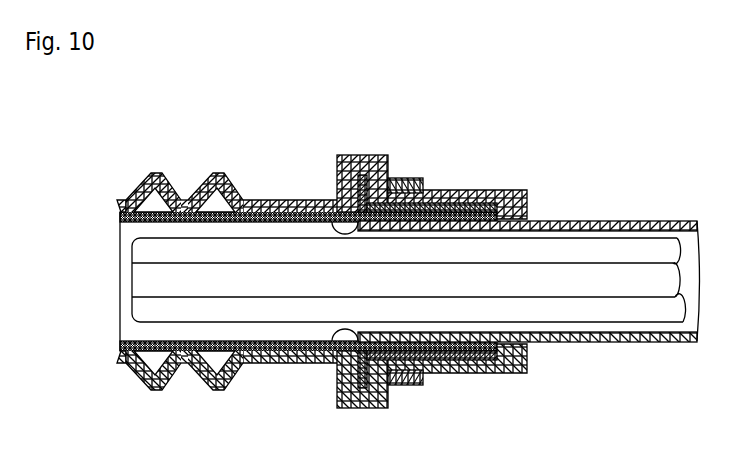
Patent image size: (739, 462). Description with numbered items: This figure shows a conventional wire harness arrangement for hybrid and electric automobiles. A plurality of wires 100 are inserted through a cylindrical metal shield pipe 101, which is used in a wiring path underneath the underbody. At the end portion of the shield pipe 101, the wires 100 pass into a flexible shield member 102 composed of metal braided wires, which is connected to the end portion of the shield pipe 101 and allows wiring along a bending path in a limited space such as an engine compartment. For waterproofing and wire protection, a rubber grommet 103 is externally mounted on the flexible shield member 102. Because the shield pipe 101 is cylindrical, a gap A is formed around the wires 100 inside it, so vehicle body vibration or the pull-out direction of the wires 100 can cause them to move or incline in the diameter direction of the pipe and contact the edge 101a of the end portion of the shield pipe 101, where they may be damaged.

The wires 100 is at (580, 252).
The shield pipe 101 is at (627, 220).
The edge 101a is at (326, 212).
The flexible shield member 102 is at (220, 205).
The rubber grommet 103 is at (173, 178).
The gap A is at (380, 237).